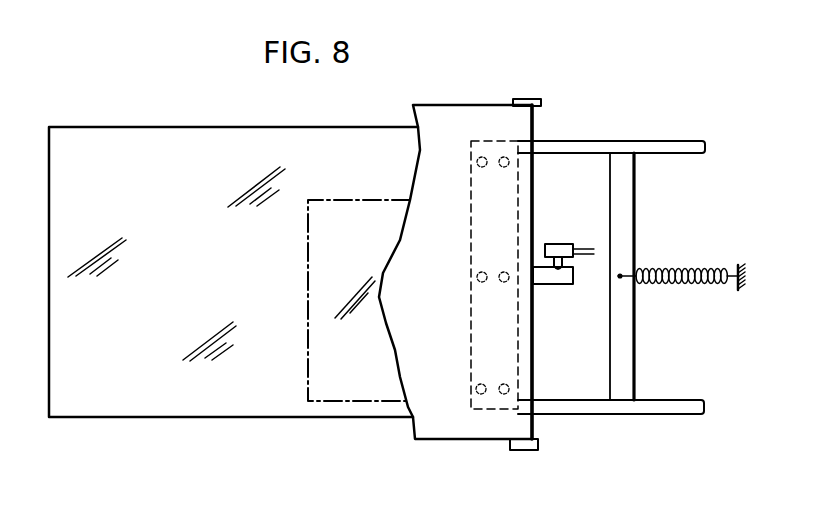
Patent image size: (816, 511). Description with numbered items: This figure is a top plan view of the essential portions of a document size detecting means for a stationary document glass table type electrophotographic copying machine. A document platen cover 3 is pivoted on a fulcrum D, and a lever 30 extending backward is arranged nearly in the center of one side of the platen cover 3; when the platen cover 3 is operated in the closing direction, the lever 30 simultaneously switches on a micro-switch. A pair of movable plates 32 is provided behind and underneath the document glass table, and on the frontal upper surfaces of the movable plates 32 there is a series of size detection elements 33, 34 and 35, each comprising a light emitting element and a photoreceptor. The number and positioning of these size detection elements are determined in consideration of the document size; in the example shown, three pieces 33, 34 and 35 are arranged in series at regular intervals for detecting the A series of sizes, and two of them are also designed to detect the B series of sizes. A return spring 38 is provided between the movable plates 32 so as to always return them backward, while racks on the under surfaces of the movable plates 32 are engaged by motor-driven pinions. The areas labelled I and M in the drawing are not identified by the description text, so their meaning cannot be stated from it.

The document platen cover 3 is at (450, 435).
The lever 30 is at (557, 284).
The movable plates 32 is at (652, 149).
The size detection element 33 is at (491, 170).
The size detection element 34 is at (483, 282).
The size detection element 35 is at (486, 378).
The return spring 38 is at (664, 270).
The fulcrum D is at (531, 100).
The image area I is at (233, 272).
The mask area M is at (359, 300).